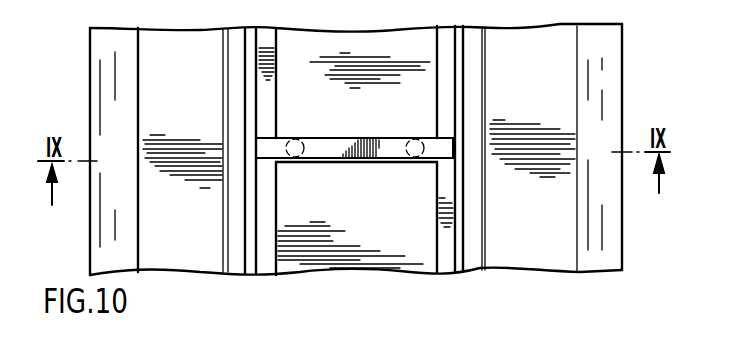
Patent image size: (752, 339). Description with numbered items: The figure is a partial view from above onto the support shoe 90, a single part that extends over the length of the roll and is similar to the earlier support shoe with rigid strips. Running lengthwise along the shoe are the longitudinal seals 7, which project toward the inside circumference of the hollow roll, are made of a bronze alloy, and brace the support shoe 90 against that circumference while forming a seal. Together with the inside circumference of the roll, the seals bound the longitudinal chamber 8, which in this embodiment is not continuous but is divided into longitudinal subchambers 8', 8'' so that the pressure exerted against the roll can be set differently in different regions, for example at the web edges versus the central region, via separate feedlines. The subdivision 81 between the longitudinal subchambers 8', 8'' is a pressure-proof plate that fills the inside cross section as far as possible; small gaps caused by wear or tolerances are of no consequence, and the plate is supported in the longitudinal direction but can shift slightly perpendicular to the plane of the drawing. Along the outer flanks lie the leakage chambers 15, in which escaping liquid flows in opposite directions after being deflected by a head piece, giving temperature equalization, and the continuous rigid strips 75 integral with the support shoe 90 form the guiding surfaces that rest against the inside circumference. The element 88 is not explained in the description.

The longitudinal seal 7 is at (263, 40).
The longitudinal chamber 8 is at (444, 137).
The longitudinal subchamber 8' is at (356, 218).
The longitudinal subchamber 8'' is at (356, 83).
The leakage chamber 15 is at (150, 85).
The rigid strip 75 is at (103, 60).
The subdivision 81 is at (328, 160).
The holder 88 is at (354, 136).
The support shoe 90 is at (630, 58).